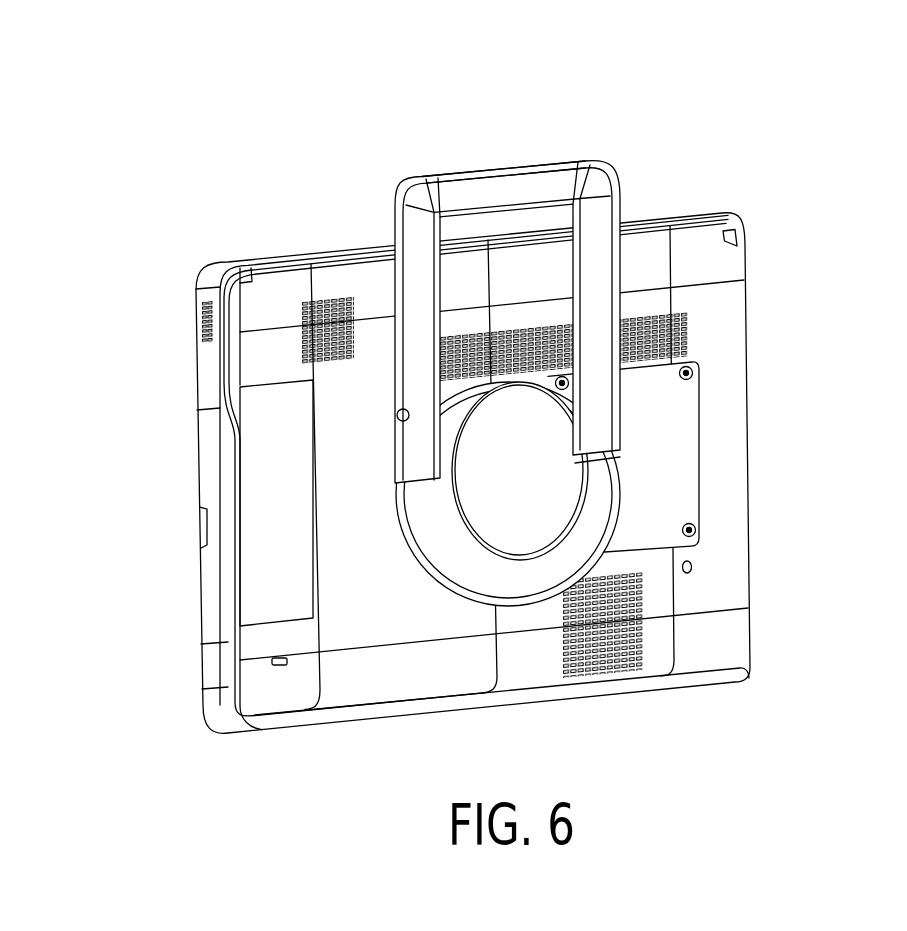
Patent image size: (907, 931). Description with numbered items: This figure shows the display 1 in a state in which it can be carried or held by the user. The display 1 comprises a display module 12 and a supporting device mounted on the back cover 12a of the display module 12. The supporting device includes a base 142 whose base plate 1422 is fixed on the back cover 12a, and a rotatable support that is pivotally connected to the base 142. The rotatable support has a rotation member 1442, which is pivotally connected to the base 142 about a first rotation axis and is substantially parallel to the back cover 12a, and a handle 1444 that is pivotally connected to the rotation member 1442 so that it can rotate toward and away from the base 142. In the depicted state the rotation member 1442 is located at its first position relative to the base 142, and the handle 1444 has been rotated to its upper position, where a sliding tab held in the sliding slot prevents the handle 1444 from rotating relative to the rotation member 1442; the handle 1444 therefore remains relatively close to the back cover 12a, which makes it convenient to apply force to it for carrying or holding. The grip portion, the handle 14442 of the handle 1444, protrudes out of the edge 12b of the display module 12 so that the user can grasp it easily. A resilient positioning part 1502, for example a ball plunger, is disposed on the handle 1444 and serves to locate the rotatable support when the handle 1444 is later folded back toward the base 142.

The display 1 is at (508, 385).
The display module 12 is at (534, 427).
The back cover 12a is at (730, 341).
The edge 12b is at (653, 218).
The base 142 is at (710, 467).
The base plate 1422 is at (687, 453).
The handle 1444 is at (436, 300).
The handle 14442 is at (502, 181).
The rotation member 1442 is at (507, 510).
The resilient positioning part 1502 is at (398, 418).